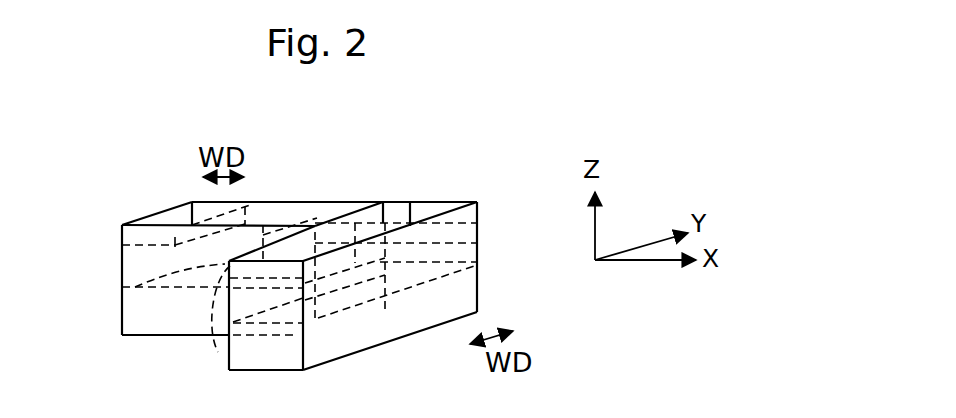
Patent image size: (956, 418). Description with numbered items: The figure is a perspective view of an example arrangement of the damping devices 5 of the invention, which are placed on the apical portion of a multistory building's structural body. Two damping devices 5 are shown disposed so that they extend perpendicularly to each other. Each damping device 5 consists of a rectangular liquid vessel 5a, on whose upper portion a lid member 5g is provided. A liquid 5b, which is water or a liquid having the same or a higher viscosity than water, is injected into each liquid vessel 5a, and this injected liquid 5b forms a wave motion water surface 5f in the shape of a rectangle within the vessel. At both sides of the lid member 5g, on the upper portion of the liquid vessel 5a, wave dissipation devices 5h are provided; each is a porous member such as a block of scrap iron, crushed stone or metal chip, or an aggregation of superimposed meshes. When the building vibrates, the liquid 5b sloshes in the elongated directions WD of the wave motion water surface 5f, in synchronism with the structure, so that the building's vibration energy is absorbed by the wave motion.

The damping device 5 is at (274, 190).
The liquid vessel 5a is at (348, 203).
The liquid 5b is at (170, 323).
The wave motion water surface 5f is at (165, 285).
The lid member 5g is at (292, 203).
The wave dissipation device 5h is at (145, 238).